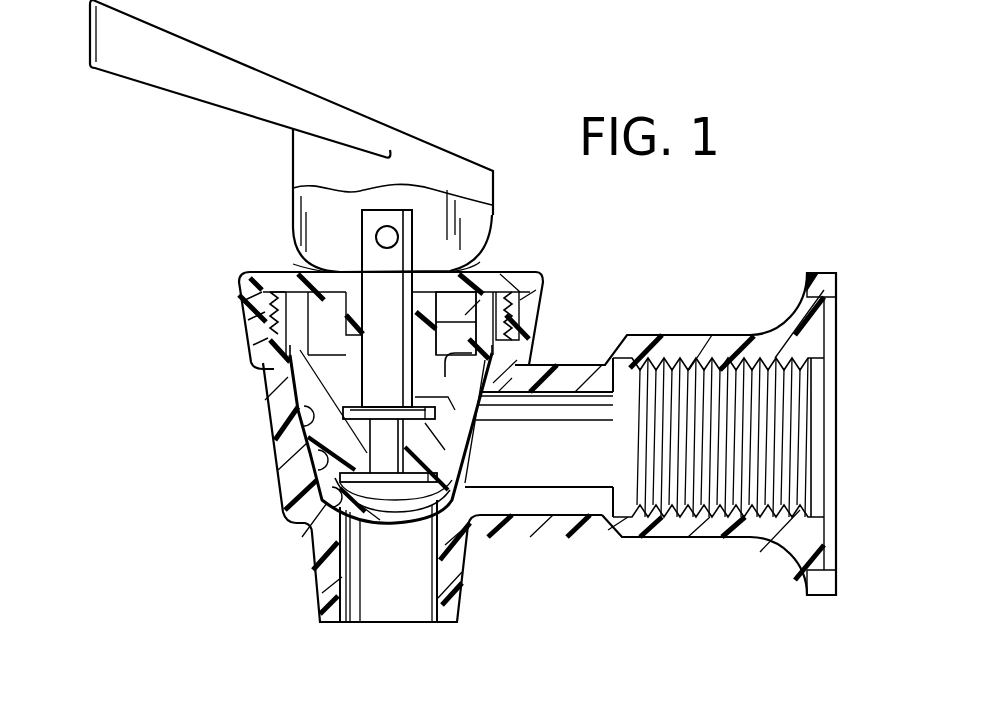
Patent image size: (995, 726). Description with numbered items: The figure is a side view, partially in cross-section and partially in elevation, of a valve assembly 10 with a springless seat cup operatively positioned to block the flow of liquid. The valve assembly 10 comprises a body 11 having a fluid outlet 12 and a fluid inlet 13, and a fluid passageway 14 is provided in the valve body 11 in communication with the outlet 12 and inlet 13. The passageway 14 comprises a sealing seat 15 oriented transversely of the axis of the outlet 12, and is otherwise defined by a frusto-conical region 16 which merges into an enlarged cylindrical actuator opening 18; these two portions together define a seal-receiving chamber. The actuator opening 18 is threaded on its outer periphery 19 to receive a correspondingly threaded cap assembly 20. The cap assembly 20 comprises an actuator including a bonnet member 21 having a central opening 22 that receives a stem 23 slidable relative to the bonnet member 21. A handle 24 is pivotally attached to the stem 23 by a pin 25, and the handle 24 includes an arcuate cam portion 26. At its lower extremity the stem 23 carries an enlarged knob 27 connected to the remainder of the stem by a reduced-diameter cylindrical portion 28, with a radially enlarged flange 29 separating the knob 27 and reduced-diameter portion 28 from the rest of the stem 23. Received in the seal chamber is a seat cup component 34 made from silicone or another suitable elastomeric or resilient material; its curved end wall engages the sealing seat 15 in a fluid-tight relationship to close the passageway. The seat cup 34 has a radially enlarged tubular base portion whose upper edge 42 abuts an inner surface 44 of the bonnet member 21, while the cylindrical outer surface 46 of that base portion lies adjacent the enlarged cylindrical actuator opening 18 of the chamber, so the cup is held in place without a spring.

The valve assembly 10 is at (252, 415).
The body 11 is at (547, 517).
The fluid outlet 12 is at (437, 588).
The fluid inlet 13 is at (543, 393).
The fluid passageway 14 is at (312, 467).
The sealing seat 15 is at (338, 507).
The frusto-conical region 16 is at (308, 436).
The actuator opening 18 is at (290, 377).
The outer periphery 19 is at (505, 292).
The cap assembly 20 is at (276, 188).
The bonnet member 21 is at (523, 268).
The central opening 22 is at (363, 316).
The stem 23 is at (407, 346).
The handle 24 is at (270, 92).
The pin 25 is at (387, 226).
The arcuate cam portion 26 is at (300, 268).
The enlarged knob 27 is at (440, 472).
The reduced-diameter cylindrical portion 28 is at (440, 438).
The radially enlarged flange 29 is at (393, 413).
The seat cup component 34 is at (407, 524).
The upper edge 42 is at (491, 272).
The inner surface 44 is at (257, 336).
The cylindrical outer surface 46 is at (495, 324).